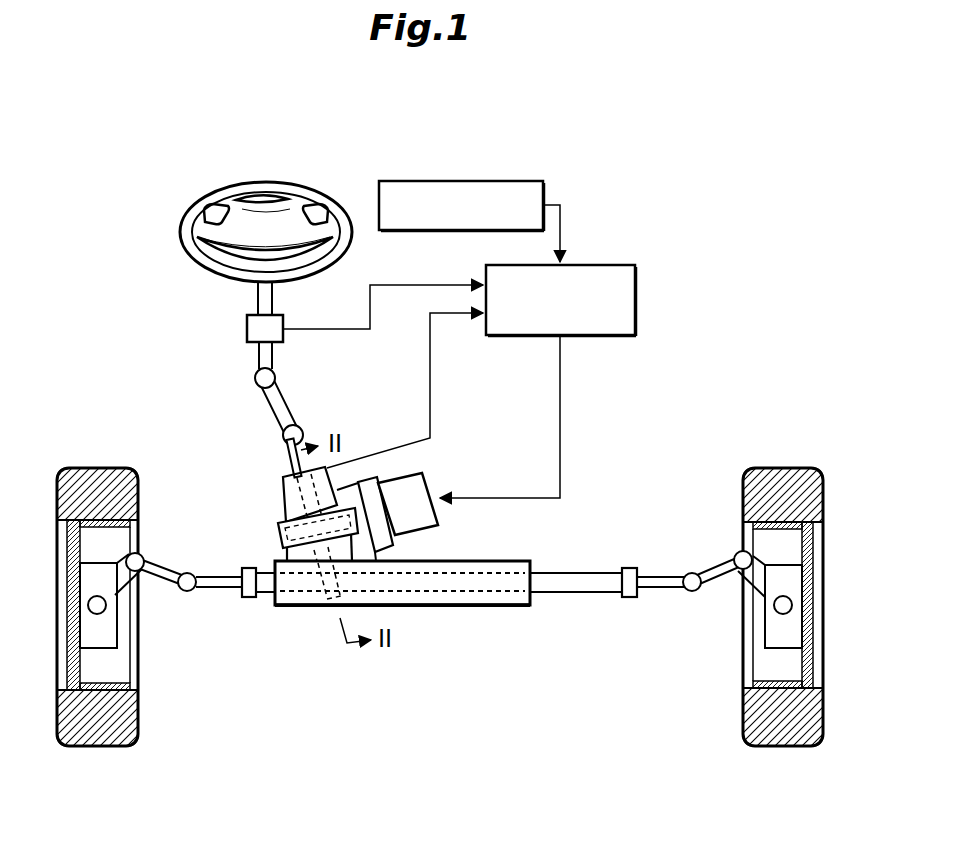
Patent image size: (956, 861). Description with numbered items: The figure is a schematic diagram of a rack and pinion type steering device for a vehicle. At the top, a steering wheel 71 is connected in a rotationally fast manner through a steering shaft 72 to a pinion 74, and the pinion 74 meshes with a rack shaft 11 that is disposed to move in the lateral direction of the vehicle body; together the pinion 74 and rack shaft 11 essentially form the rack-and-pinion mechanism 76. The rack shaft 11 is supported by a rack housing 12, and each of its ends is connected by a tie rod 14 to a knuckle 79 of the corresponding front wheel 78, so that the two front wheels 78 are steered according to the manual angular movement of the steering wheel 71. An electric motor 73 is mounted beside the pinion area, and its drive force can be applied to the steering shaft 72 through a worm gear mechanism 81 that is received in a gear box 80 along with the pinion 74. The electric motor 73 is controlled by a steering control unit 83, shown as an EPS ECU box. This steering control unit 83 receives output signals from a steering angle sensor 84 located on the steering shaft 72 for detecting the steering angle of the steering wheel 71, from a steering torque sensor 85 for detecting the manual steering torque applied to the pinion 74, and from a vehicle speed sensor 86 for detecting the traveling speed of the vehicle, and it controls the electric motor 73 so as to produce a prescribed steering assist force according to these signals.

The rack shaft 11 is at (450, 592).
The rack housing 12 is at (492, 607).
The tie rod 14 is at (156, 580).
The steering wheel 71 is at (180, 232).
The steering shaft 72 is at (256, 297).
The electric motor 73 is at (430, 481).
The pinion 74 is at (318, 594).
The rack-and-pinion mechanism 76 is at (325, 608).
The front wheel 78 is at (103, 467).
The knuckle 79 is at (125, 558).
The gear box 80 is at (413, 609).
The worm gear mechanism 81 is at (283, 540).
The steering control unit 83 is at (605, 263).
The steering angle sensor 84 is at (247, 332).
The steering torque sensor 85 is at (283, 500).
The vehicle speed sensor 86 is at (505, 180).